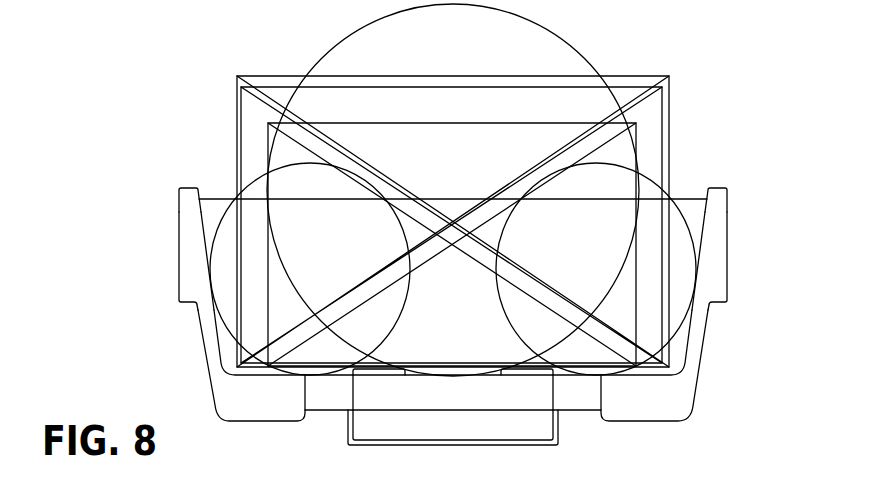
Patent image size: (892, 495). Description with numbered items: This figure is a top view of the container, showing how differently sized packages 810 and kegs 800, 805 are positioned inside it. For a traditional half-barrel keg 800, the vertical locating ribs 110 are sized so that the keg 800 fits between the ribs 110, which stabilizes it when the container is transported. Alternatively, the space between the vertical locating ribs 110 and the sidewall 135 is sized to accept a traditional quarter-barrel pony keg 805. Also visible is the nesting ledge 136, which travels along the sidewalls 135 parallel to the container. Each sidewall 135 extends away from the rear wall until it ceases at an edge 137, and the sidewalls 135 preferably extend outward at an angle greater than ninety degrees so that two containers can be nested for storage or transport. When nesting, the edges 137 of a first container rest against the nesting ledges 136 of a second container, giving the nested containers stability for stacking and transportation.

The half-barrel keg 800 is at (325, 53).
The quarter-barrel pony keg 805 is at (637, 161).
The package 810 is at (232, 80).
The vertical locating rib 110 is at (377, 366).
The sidewall 135 is at (177, 249).
The nesting ledge 136 is at (187, 305).
The edge 137 is at (177, 187).